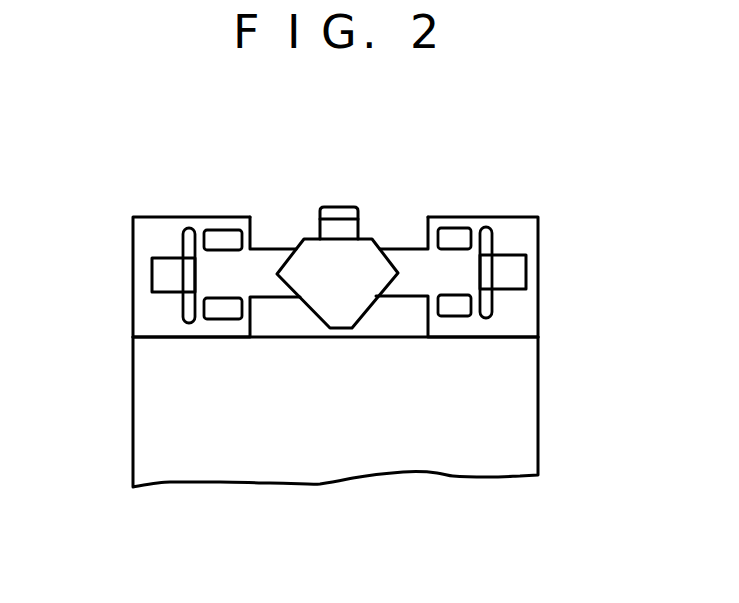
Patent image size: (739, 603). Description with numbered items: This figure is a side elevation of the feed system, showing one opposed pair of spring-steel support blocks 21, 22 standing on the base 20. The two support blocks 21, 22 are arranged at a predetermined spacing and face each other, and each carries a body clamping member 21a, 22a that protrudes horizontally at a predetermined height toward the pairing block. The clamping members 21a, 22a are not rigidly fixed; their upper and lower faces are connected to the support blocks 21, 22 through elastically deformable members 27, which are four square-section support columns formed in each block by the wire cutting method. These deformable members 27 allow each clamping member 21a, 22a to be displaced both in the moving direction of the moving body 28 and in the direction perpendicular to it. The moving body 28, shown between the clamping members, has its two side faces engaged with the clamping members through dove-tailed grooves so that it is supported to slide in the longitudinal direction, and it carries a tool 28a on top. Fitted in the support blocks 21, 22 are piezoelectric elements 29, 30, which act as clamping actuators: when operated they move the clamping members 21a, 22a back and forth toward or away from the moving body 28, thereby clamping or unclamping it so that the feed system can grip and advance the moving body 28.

The base 20 is at (523, 400).
The support block 21 is at (145, 323).
The body clamping member 21a is at (266, 260).
The support block 22 is at (528, 304).
The body clamping member 22a is at (407, 255).
The elastically deformable members 27 is at (232, 230).
The moving body 28 is at (352, 310).
The tool 28a is at (338, 207).
The piezoelectric element 29 is at (163, 273).
The piezoelectric element 30 is at (512, 272).